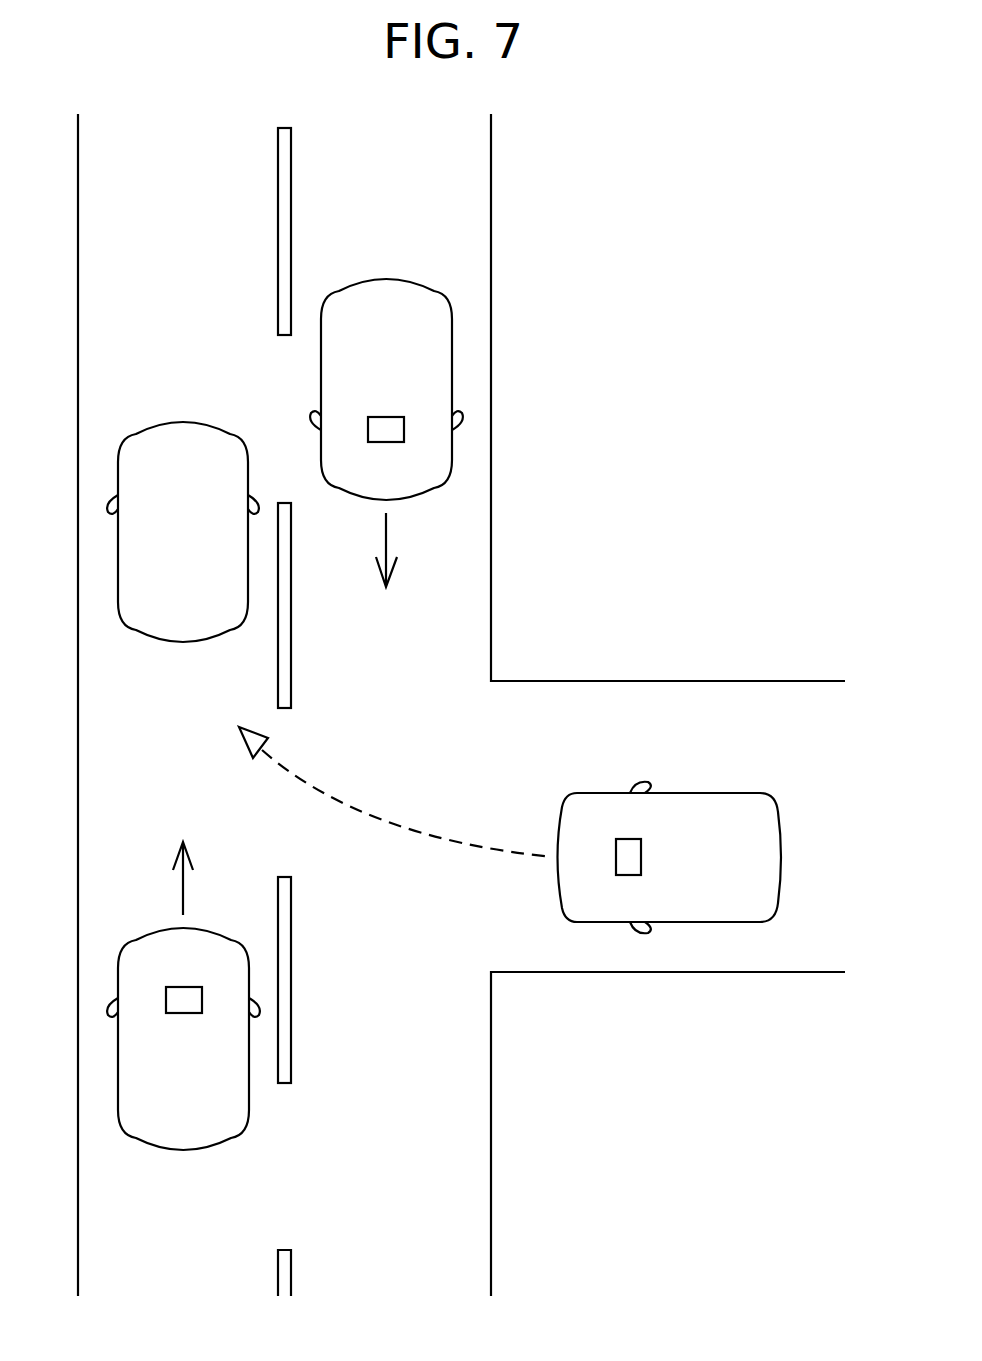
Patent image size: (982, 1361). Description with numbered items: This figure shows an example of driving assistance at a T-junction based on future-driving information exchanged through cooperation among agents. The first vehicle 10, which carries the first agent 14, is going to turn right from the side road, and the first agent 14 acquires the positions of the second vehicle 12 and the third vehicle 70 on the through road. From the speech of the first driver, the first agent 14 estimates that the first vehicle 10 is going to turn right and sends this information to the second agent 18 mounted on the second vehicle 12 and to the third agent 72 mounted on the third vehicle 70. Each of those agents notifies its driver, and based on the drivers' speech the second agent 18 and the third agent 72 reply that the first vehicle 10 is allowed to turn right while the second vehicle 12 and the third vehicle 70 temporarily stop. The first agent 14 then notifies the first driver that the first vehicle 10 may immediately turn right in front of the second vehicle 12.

The first vehicle 10 is at (716, 793).
The second vehicle 12 is at (228, 1114).
The first agent 14 is at (641, 857).
The second agent 18 is at (183, 1013).
The third vehicle 70 is at (400, 280).
The third agent 72 is at (392, 418).